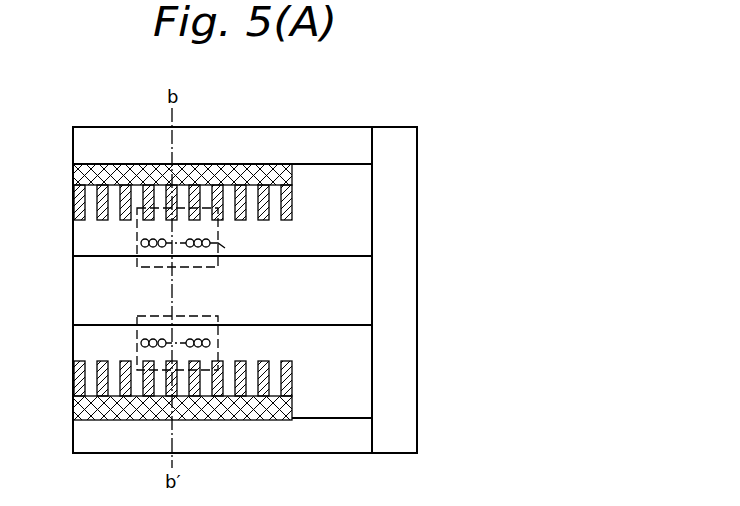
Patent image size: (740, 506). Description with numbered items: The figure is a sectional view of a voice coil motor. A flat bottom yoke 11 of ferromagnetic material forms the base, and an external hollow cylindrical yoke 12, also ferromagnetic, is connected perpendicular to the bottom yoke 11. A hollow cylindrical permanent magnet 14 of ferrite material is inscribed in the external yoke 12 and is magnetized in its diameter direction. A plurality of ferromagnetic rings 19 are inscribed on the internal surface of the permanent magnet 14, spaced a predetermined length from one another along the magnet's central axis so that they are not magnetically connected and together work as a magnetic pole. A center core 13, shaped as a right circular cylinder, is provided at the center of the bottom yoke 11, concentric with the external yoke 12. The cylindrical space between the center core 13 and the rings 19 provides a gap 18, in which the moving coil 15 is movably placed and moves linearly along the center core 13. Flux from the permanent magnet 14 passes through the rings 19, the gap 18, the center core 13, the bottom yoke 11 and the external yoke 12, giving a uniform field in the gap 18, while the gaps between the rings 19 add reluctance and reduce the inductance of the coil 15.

The flat bottom yoke 11 is at (411, 284).
The external hollow cylindrical yoke 12 is at (316, 444).
The center core 13 is at (343, 263).
The hollow cylindrical permanent magnet 14 is at (78, 175).
The moving coil 15 is at (218, 323).
The gap 18 is at (87, 243).
The ferromagnetic rings 19 is at (75, 208).